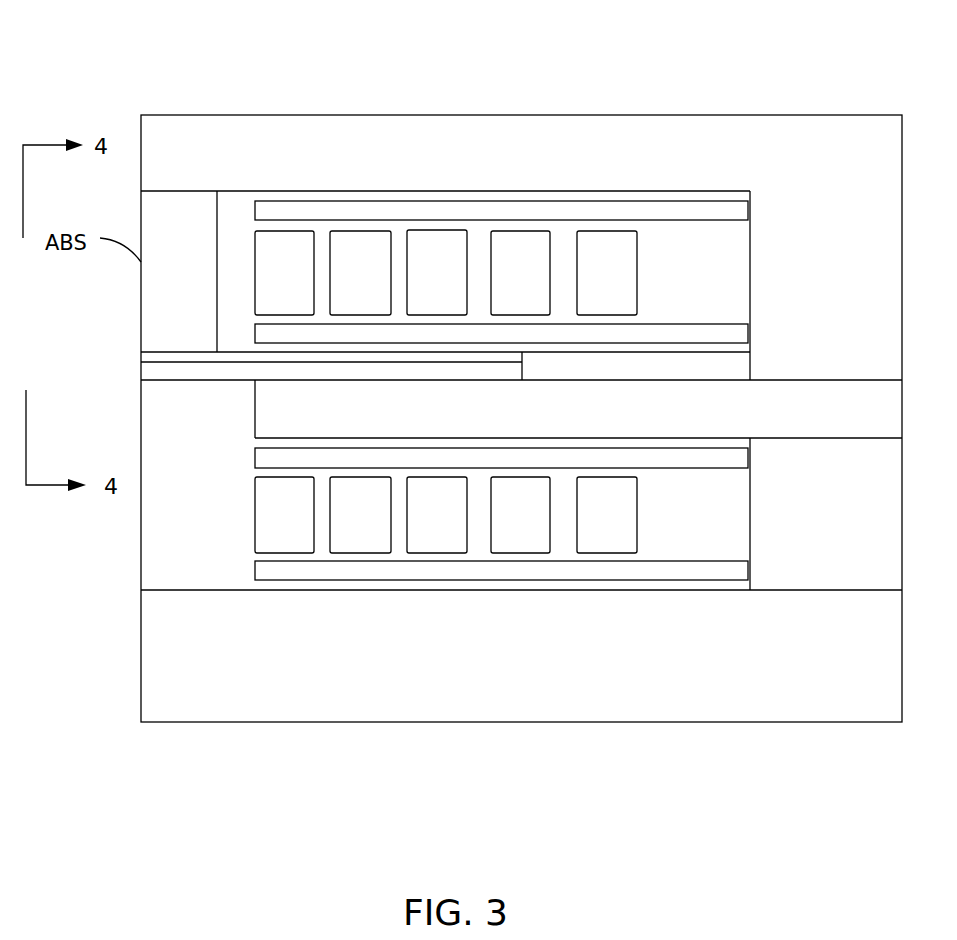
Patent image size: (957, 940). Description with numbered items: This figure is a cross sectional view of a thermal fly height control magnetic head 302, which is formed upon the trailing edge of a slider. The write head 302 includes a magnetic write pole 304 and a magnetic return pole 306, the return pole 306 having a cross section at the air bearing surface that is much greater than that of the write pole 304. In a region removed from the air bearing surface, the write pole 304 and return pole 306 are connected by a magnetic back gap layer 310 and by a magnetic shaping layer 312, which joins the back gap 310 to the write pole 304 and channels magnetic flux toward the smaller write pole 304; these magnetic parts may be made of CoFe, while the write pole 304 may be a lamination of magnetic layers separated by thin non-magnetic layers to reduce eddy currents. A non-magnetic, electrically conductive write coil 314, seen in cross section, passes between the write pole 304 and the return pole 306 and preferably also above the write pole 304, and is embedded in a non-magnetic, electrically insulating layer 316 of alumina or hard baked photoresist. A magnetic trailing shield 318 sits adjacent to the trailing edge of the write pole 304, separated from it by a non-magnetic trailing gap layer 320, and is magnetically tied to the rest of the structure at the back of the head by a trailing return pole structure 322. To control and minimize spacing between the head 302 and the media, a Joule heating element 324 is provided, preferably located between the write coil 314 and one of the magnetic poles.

The magnetic head 302 is at (523, 108).
The magnetic write pole 304 is at (505, 372).
The magnetic return pole 306 is at (610, 636).
The magnetic back gap layer 310 is at (856, 495).
The magnetic shaping layer 312 is at (574, 408).
The write coil 314 is at (446, 391).
The non-magnetic, electrically insulating layer 316 is at (744, 262).
The magnetic trailing shield 318 is at (212, 240).
The non-magnetic trailing gap layer 320 is at (523, 360).
The trailing return pole structure 322 is at (544, 153).
The heating element 324 is at (738, 211).